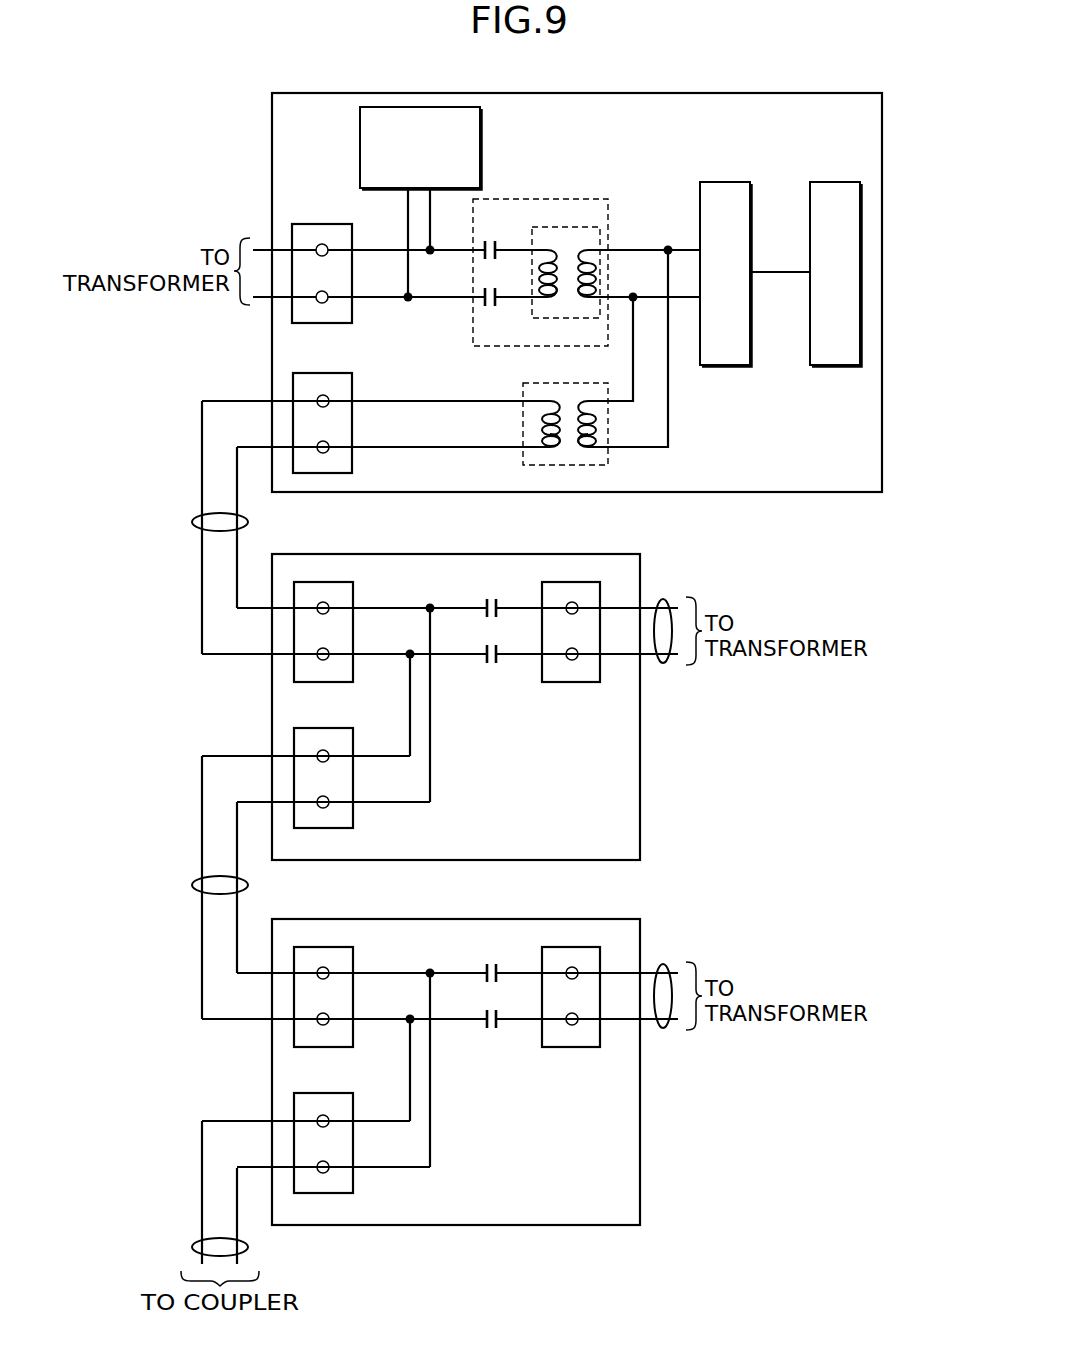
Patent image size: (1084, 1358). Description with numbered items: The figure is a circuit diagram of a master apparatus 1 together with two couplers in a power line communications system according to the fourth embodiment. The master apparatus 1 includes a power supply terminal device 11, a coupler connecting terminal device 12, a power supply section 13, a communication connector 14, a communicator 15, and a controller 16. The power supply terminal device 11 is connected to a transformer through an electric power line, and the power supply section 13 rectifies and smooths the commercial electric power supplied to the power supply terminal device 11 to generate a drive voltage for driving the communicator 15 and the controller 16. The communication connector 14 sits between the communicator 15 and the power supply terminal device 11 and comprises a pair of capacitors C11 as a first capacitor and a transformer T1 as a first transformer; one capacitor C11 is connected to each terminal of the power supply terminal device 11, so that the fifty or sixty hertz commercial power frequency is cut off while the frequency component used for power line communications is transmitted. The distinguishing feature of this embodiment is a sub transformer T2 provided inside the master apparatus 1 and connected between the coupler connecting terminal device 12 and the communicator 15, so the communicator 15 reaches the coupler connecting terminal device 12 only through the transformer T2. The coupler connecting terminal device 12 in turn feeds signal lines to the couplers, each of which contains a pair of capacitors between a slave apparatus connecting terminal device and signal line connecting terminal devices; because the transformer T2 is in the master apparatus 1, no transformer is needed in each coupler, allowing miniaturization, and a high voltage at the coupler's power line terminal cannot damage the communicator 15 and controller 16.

The master apparatus 1 is at (882, 291).
The power supply terminal device 11 is at (352, 317).
The coupler connecting terminal device 12 is at (352, 465).
The power supply section 13 is at (481, 128).
The communication connector 14 is at (586, 199).
The communicator 15 is at (726, 182).
The controller 16 is at (836, 182).
The capacitor C11 is at (498, 292).
The transformer T1 is at (562, 318).
The transformer T2 is at (608, 455).